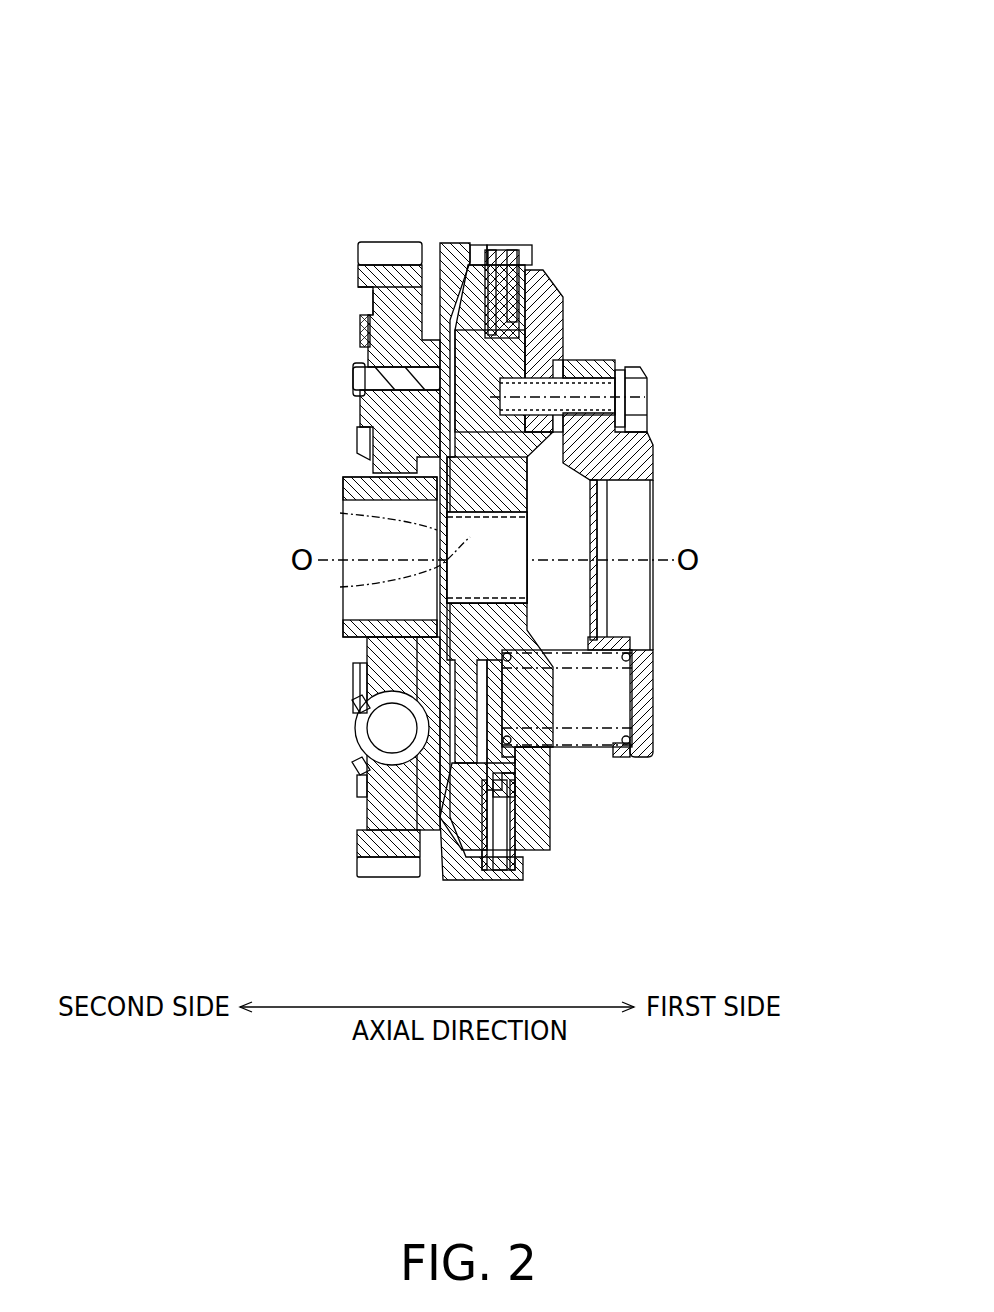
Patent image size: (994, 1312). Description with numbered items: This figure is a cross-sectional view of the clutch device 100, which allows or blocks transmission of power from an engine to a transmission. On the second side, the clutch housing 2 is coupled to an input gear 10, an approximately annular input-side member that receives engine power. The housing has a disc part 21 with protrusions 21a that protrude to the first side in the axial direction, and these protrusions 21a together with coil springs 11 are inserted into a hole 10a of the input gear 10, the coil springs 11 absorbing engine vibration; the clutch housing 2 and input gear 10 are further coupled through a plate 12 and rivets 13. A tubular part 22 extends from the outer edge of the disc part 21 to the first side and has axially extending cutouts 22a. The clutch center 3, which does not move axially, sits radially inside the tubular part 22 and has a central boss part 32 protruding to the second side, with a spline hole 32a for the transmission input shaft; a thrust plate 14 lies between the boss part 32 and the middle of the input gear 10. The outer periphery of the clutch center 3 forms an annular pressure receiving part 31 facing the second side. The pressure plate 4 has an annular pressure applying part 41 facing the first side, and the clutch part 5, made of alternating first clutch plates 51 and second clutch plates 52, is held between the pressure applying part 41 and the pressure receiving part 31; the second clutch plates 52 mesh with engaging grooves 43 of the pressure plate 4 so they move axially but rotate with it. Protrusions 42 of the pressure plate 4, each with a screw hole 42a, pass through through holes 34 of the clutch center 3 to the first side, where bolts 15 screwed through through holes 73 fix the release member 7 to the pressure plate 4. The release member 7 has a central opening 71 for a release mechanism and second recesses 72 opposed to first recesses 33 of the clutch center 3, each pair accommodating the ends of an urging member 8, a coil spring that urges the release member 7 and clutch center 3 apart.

The clutch device 100 is at (608, 106).
The clutch housing 2 is at (450, 240).
The clutch center 3 is at (560, 335).
The pressure plate 4 is at (372, 305).
The clutch part 5 is at (528, 252).
The release member 7 is at (655, 697).
The urging members 8 is at (568, 657).
The input gear 10 is at (355, 240).
The hole 10a is at (362, 775).
The coil springs 11 is at (385, 735).
The plate 12 is at (360, 338).
The rivets 13 is at (354, 375).
The thrust plate 14 is at (345, 514).
The bolts 15 is at (648, 412).
The disc part 21 is at (378, 655).
The protrusions 21a is at (360, 410).
The tubular part 22 is at (478, 244).
The cutouts 22a is at (488, 244).
The pressure receiving part 31 is at (578, 282).
The boss part 32 is at (442, 492).
The spline hole 32a is at (342, 587).
The first recesses 33 is at (520, 742).
The through holes 34 is at (566, 355).
The pressure applying part 41 is at (368, 292).
The protrusions 42 is at (590, 366).
The screw hole 42a is at (648, 398).
The engaging grooves 43 is at (540, 296).
The first clutch plate 51 is at (508, 248).
The second clutch plate 52 is at (540, 266).
The opening 71 is at (607, 500).
The second recesses 72 is at (604, 750).
The through holes 73 is at (624, 428).